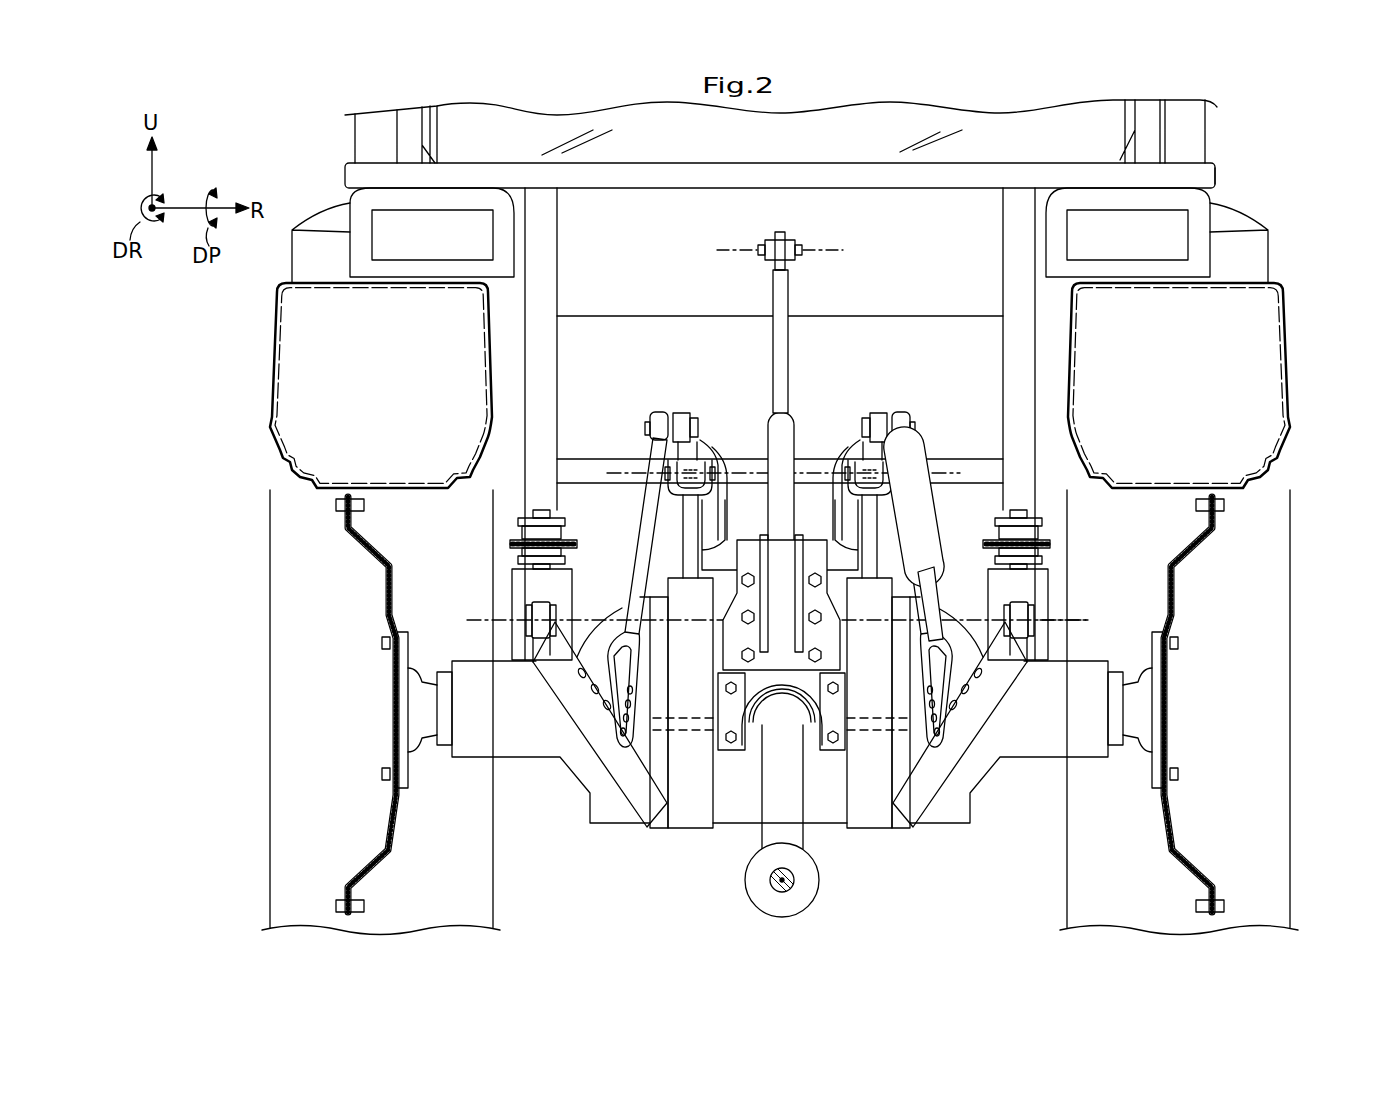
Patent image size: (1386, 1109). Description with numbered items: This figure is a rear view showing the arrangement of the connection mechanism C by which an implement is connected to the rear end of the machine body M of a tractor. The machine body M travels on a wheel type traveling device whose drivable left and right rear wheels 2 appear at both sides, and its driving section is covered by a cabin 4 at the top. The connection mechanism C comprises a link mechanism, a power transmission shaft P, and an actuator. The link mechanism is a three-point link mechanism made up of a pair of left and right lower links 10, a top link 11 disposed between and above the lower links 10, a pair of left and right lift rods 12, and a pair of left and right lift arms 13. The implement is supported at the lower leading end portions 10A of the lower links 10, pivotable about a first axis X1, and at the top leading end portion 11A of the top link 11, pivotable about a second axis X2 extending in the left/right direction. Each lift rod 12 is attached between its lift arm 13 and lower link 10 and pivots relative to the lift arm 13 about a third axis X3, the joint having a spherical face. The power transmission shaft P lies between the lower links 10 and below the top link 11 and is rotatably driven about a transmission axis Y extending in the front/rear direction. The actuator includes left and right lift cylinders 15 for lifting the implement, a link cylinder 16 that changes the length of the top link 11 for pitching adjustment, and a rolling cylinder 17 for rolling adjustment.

The rear wheel 2 is at (278, 360).
The cabin 4 is at (360, 144).
The lower link 10 is at (565, 687).
The lower leading end portion 10A is at (536, 602).
The top link 11 is at (797, 411).
The top leading end portion 11A is at (781, 232).
The lift rod 12 is at (968, 561).
The lift arm 13 is at (897, 388).
The lift cylinder 15 is at (693, 700).
The link cylinder 16 is at (770, 448).
The rolling cylinder 17 is at (925, 505).
The connection mechanism C is at (714, 297).
The machine body M is at (1250, 170).
The power transmission shaft P is at (796, 765).
The transmission axis Y is at (792, 887).
The first axis X1 is at (1080, 622).
The second axis X2 is at (795, 251).
The third axis X3 is at (620, 472).